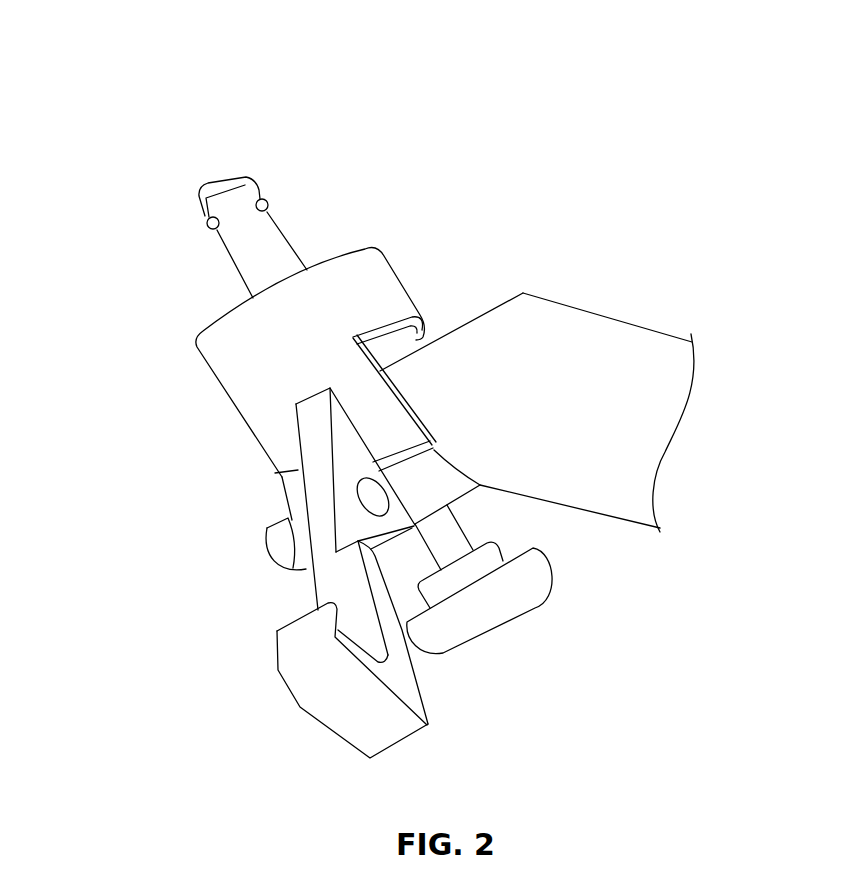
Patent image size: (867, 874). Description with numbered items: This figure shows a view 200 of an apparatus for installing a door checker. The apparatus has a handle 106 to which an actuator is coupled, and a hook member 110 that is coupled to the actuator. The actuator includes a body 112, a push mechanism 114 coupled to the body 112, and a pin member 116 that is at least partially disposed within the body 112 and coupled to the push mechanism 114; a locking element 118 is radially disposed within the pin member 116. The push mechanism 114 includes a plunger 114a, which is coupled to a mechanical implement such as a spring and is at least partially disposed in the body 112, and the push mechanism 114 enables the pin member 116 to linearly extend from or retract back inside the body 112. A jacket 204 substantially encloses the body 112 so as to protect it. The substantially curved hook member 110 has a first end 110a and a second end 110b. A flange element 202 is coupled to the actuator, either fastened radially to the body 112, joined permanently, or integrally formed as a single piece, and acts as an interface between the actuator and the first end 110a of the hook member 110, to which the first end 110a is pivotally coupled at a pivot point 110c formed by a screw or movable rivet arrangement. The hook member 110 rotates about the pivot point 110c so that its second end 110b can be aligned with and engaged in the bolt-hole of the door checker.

The view 200 is at (127, 64).
The handle 106 is at (612, 413).
The hook member 110 is at (312, 581).
The first end 110a is at (290, 472).
The second end 110b is at (295, 658).
The pivot point 110c is at (266, 538).
The body 112 is at (393, 343).
The push mechanism 114 is at (492, 513).
The plunger 114a is at (530, 603).
The pin member 116 is at (272, 244).
The locking element 118 is at (268, 201).
The flange element 202 is at (350, 456).
The jacket 204 is at (366, 283).